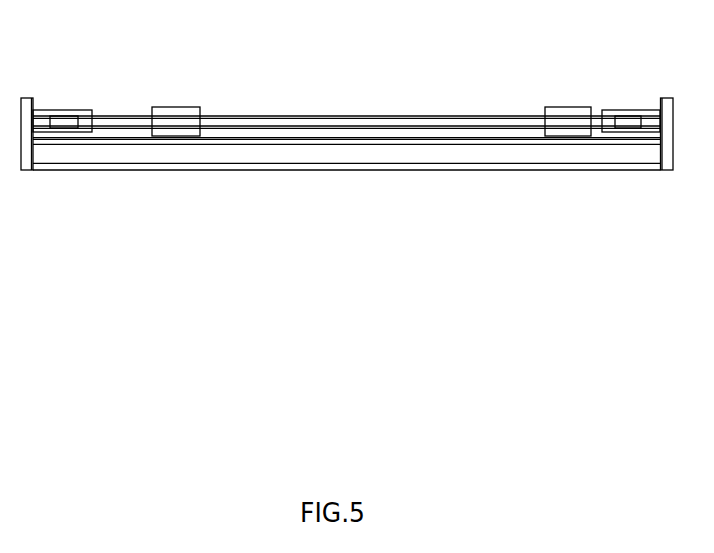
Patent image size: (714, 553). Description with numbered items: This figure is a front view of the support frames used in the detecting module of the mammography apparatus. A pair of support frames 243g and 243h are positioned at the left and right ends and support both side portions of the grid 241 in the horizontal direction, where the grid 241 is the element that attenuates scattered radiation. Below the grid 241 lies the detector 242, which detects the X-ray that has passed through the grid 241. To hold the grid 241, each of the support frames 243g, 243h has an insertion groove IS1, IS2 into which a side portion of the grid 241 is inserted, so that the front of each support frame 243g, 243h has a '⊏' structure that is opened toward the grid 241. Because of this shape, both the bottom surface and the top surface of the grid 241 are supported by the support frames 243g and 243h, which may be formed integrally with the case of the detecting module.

The grid 241 is at (308, 117).
The detector 242 is at (392, 152).
The support frame 243g is at (61, 147).
The support frame 243h is at (633, 147).
The insertion groove IS1 is at (68, 120).
The insertion groove IS2 is at (633, 120).